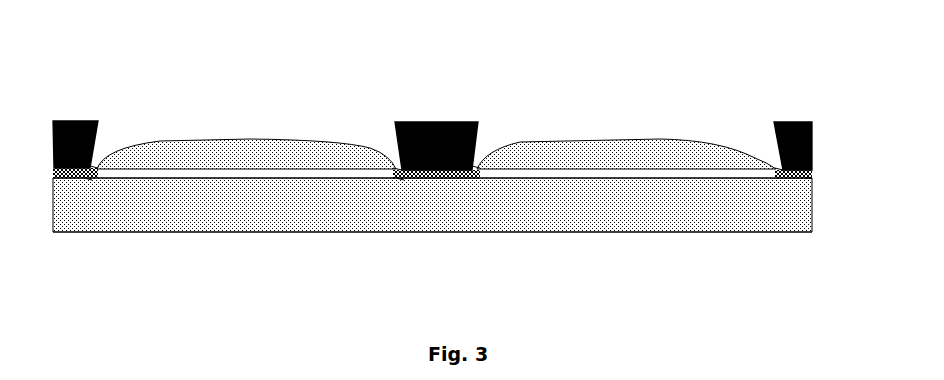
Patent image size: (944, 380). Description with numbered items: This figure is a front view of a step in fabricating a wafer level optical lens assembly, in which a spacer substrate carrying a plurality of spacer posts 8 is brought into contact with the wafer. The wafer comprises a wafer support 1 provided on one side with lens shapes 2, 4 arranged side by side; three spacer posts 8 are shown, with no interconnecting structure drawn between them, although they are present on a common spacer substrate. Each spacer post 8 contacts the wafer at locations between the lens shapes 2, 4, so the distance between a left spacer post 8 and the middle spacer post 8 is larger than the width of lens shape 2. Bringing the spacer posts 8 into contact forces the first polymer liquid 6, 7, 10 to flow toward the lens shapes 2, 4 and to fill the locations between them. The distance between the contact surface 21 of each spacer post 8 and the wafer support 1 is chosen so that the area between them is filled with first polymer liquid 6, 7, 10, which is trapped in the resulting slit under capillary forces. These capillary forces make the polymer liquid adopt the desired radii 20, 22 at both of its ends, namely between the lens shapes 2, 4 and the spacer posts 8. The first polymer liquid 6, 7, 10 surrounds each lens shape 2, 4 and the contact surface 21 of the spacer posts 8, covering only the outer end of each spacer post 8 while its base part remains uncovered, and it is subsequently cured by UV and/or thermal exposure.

The wafer support 1 is at (597, 200).
The lens shape 2 is at (226, 160).
The lens shape 4 is at (609, 160).
The first polymer liquid 6 is at (400, 180).
The first polymer liquid 7 is at (88, 180).
The spacer post 8 is at (80, 121).
The first polymer liquid 10 is at (813, 178).
The radius 20 is at (92, 165).
The contact surface 21 is at (60, 176).
The radius 22 is at (395, 166).